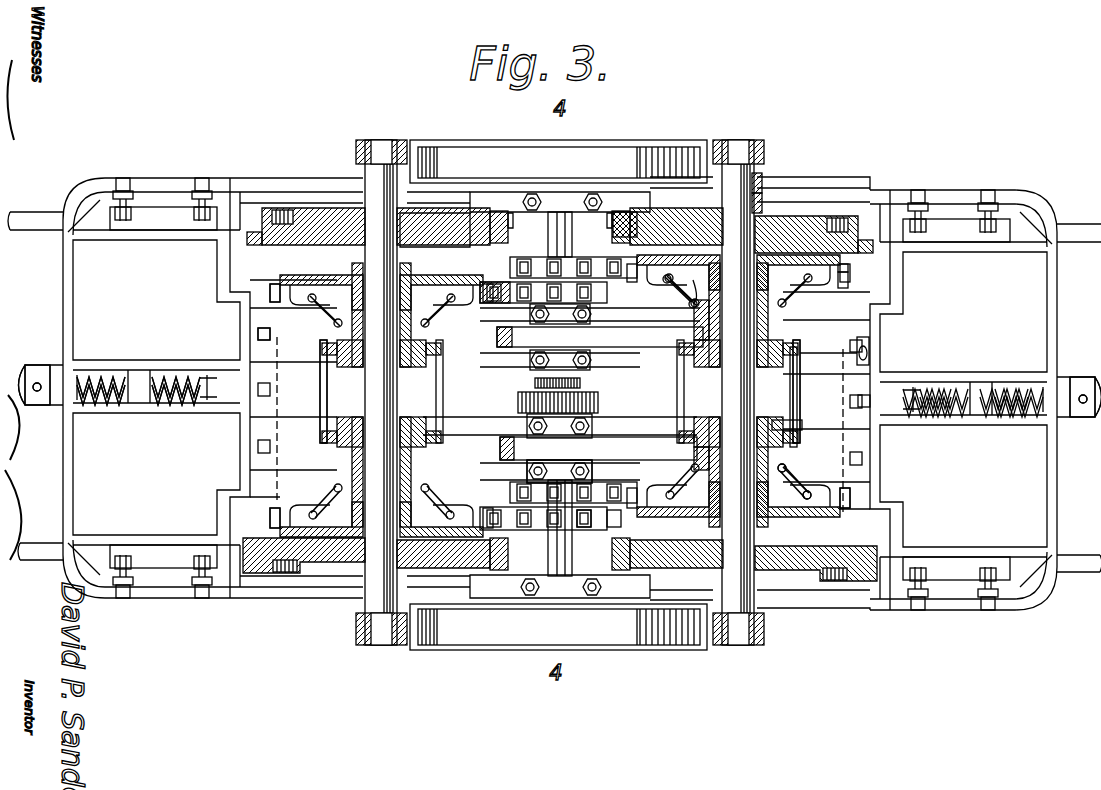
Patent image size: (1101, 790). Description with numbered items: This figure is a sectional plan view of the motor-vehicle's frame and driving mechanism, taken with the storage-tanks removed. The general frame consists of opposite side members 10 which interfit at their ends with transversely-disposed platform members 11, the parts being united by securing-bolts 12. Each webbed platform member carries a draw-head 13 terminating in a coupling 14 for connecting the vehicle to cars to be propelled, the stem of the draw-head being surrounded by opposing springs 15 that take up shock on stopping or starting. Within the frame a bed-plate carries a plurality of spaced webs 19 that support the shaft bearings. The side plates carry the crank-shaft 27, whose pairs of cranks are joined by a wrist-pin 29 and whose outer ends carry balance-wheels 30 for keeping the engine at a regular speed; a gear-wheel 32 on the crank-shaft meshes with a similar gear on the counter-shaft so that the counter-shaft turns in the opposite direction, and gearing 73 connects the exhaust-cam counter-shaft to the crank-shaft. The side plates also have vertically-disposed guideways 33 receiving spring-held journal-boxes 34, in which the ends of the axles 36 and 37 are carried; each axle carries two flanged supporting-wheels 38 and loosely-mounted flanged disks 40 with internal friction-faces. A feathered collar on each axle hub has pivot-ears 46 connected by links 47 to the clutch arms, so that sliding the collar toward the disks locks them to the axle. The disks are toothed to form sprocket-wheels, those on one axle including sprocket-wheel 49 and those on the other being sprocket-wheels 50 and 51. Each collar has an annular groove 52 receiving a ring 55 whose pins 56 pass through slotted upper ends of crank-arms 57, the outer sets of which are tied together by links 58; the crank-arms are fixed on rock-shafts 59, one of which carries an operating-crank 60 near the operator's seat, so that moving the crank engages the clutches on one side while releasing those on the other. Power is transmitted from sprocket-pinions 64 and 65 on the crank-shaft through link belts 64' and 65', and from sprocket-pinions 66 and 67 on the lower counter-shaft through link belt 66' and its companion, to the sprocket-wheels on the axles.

The side members 10 is at (888, 198).
The platform members 11 is at (1032, 185).
The securing-bolts 12 is at (993, 192).
The draw-heads 13 is at (80, 372).
The couplings 14 is at (28, 370).
The opposing springs 15 is at (155, 372).
The spaced webs 19 is at (272, 312).
The crank-shaft 27 is at (553, 233).
The wrist-pin 29 is at (497, 336).
The balance-wheels 30 is at (558, 395).
The gear-wheel 32 is at (598, 402).
The guideways 33 is at (768, 196).
The journal-boxes 34 is at (765, 188).
The shaft 36 is at (733, 180).
The shaft 37 is at (377, 252).
The flanged supporting-wheels 38 is at (287, 205).
The flanged disks 40 is at (848, 285).
The pivot-ears 46 is at (692, 306).
The links 47 is at (677, 282).
The sprocket-wheel 49 is at (847, 497).
The sprocket-wheel 50 is at (268, 292).
The sprocket-wheel 51 is at (268, 518).
The annular groove 52 is at (345, 367).
The ring 55 is at (564, 426).
The pins 56 is at (785, 455).
The crank-arms 57 is at (797, 425).
The links 58 is at (797, 386).
The rock-shafts 59 is at (485, 437).
The operating-crank 60 is at (868, 353).
The sprocket-pinion 64 is at (543, 378).
The link belt 64' is at (658, 190).
The sprocket-pinion 65 is at (540, 282).
The link belt 65' is at (468, 338).
The sprocket-pinion 66 is at (568, 465).
The link belt 66' is at (538, 507).
The sprocket-pinion 67 is at (577, 532).
The gearing 73 is at (580, 383).